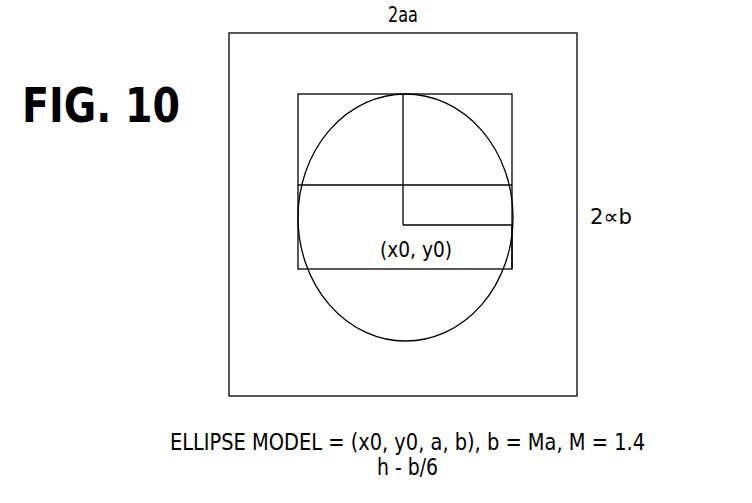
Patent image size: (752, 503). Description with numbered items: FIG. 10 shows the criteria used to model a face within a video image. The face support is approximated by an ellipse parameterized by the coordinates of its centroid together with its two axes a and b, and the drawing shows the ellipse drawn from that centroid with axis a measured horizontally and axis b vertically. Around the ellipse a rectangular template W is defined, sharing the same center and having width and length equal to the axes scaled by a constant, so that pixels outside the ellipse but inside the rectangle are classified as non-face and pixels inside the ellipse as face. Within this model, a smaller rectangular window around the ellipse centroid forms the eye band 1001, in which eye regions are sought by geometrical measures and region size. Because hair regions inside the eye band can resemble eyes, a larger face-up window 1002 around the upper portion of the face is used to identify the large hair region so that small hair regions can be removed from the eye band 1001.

The eye band window 1001 is at (312, 218).
The face-up window 1002 is at (506, 114).
The rectangular template W is at (403, 214).
The ellipse axis a is at (458, 212).
The ellipse axis b is at (411, 159).
The vertical offset h is at (524, 247).